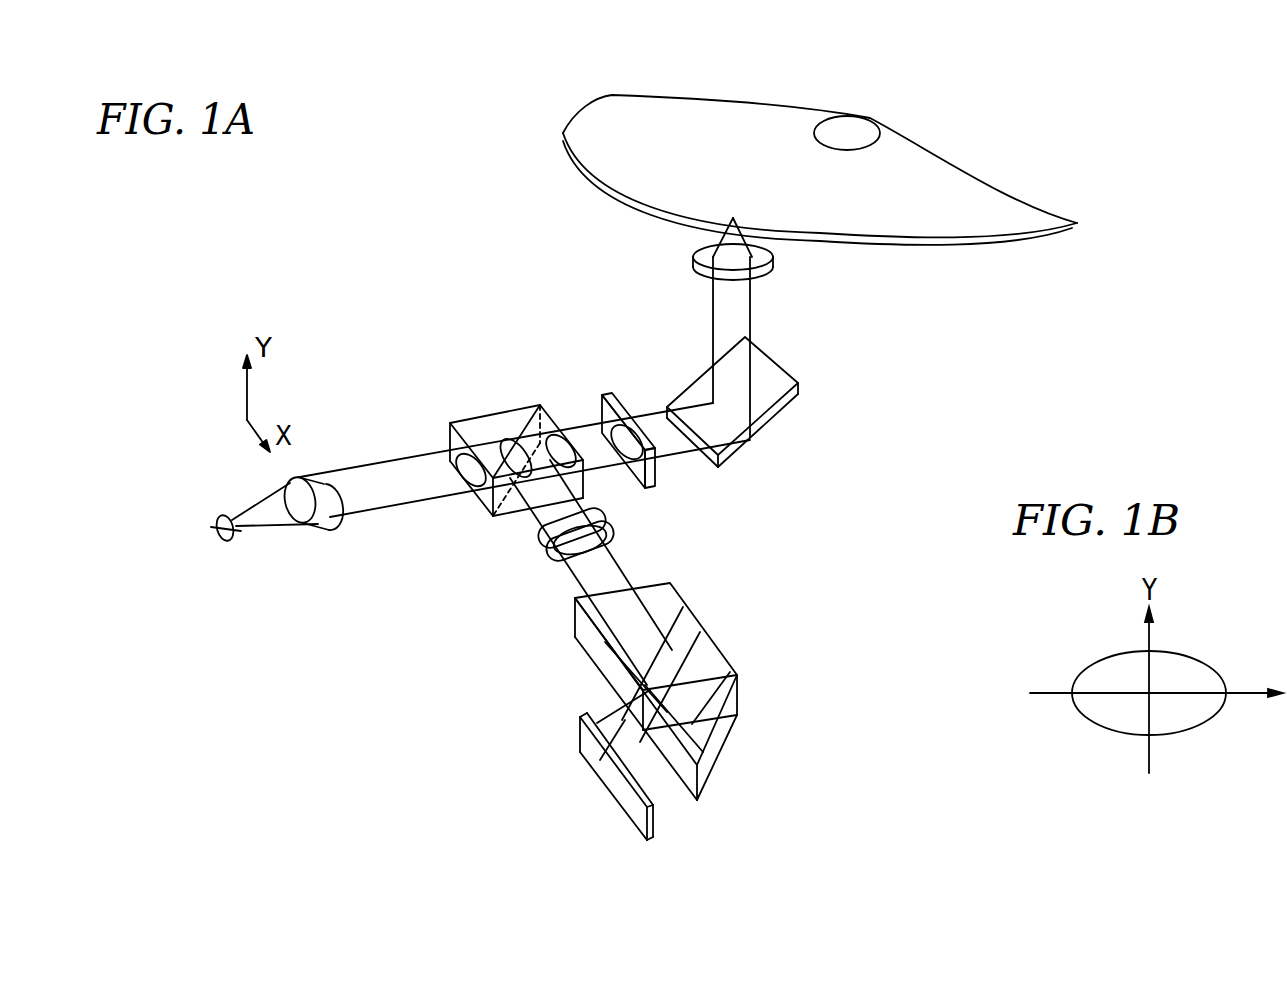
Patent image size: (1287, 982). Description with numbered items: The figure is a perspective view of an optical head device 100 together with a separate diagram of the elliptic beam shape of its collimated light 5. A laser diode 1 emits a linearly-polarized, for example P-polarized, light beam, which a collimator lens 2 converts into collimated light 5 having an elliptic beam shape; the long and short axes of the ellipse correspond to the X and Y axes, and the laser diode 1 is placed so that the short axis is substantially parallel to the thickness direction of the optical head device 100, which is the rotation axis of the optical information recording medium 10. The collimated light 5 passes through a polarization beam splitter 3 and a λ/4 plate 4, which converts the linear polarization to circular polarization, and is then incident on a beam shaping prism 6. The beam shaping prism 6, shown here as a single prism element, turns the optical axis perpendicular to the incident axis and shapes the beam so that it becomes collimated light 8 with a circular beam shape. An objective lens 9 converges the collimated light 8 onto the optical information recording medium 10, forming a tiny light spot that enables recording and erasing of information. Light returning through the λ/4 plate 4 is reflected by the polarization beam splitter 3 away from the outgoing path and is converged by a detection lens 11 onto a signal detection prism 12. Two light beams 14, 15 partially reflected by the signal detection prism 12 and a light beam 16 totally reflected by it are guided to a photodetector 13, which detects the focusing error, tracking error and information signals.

In FIG. 1A, the laser diode 1 is at (243, 532).
In FIG. 1A, the collimator lens 2 is at (340, 520).
In FIG. 1A, the polarization beam splitter 3 is at (478, 418).
In FIG. 1A, the λ/4 plate 4 is at (595, 405).
In FIG. 1A, the collimated light 5 is at (388, 470).
In FIG. 1B, the collimated light 5 is at (1205, 712).
In FIG. 1A, the beam shaping prism 6 is at (773, 395).
In FIG. 1A, the collimated light 8 is at (747, 322).
In FIG. 1A, the objective lens 9 is at (773, 263).
In FIG. 1A, the optical information recording medium 10 is at (958, 228).
In FIG. 1A, the detection lens 11 is at (603, 518).
In FIG. 1A, the signal detection prism 12 is at (717, 658).
In FIG. 1A, the photodetector 13 is at (590, 758).
In FIG. 1A, the light beam 14 is at (603, 667).
In FIG. 1A, the light beam 15 is at (660, 735).
In FIG. 1A, the light beam 16 is at (667, 787).
In FIG. 1A, the optical head device 100 is at (805, 708).